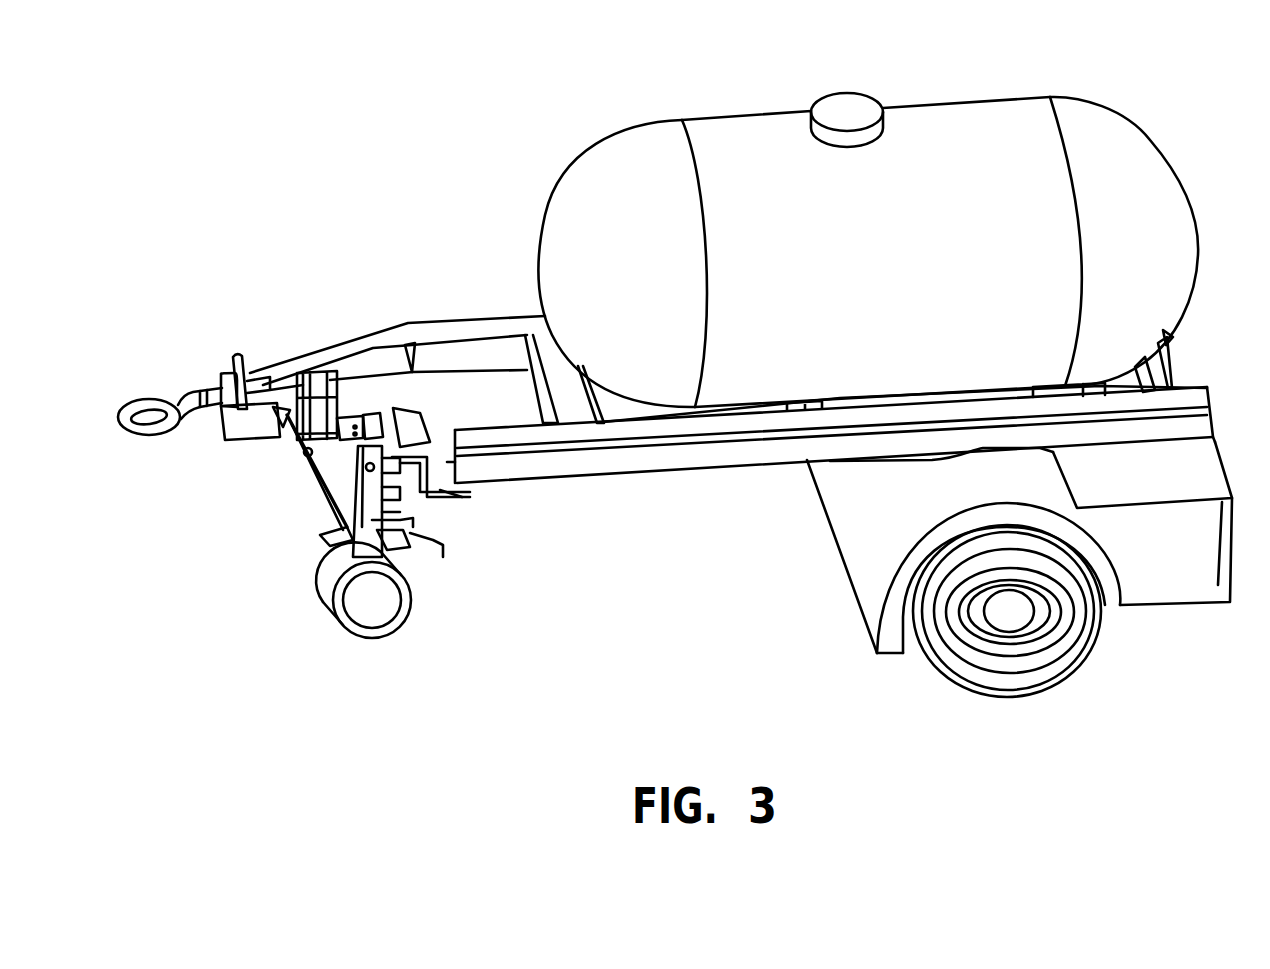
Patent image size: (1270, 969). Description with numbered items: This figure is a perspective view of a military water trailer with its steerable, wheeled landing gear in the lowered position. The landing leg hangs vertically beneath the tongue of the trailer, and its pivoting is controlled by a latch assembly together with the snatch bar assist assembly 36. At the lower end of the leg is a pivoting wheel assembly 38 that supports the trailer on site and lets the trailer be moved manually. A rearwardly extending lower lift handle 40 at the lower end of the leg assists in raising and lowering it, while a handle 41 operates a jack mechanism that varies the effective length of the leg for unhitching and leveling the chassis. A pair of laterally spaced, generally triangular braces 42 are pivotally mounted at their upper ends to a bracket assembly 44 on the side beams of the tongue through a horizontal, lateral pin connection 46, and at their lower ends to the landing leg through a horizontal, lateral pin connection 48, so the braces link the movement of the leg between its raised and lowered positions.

The snatch bar assist assembly 36 is at (402, 520).
The pivoting wheel assembly 38 is at (370, 612).
The lower lift handle 40 is at (417, 543).
The handle 41 is at (462, 497).
The triangular braces 42 is at (327, 467).
The bracket assembly 44 is at (270, 433).
The pin connection 46 is at (307, 457).
The pin connection 48 is at (327, 537).